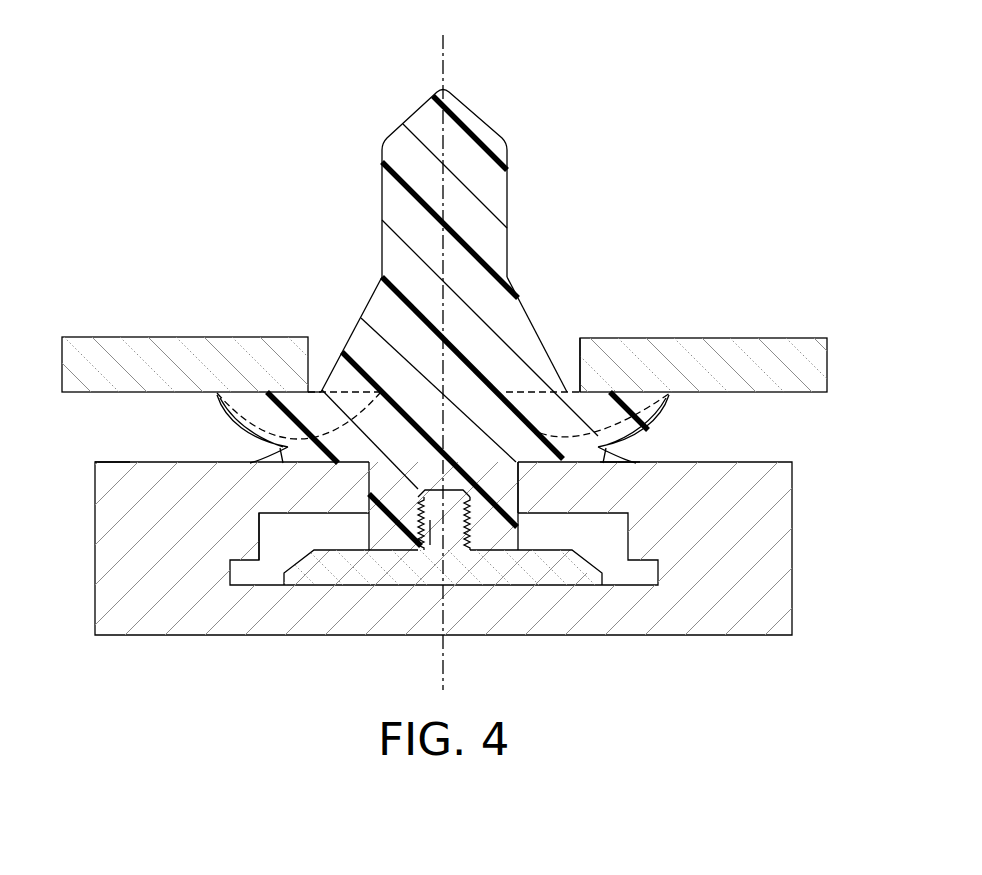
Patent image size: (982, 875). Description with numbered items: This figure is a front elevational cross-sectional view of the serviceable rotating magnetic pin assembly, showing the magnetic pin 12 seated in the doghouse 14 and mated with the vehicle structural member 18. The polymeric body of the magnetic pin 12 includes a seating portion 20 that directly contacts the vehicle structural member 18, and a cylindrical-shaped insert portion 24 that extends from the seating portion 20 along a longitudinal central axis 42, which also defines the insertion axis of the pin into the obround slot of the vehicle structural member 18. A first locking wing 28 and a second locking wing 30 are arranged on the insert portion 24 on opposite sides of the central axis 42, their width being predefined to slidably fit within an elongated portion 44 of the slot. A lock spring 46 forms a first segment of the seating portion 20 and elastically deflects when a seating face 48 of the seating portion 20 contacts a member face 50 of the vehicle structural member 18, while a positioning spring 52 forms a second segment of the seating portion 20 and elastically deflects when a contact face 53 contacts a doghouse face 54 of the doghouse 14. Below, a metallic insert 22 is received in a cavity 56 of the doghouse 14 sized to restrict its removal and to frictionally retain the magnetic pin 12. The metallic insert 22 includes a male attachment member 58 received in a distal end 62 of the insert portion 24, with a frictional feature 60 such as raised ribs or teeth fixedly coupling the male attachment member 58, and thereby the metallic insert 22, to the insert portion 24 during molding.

The magnetic pin 12 is at (498, 306).
The doghouse 14 is at (120, 547).
The vehicle structural member 18 is at (180, 350).
The seating portion 20 is at (553, 463).
The metallic insert 22 is at (333, 568).
The insert portion 24 is at (397, 212).
The first locking wing 28 is at (367, 335).
The second locking wing 30 is at (513, 330).
The longitudinal central axis 42 is at (445, 58).
The elongated portion 44 is at (578, 352).
The lock spring 46 is at (593, 420).
The seating face 48 is at (288, 390).
The member face 50 is at (142, 393).
The positioning spring 52 is at (597, 448).
The contact face 53 is at (613, 463).
The doghouse face 54 is at (110, 462).
The cavity 56 is at (270, 513).
The male attachment member 58 is at (452, 528).
The frictional feature 60 is at (417, 513).
The distal end 62 is at (495, 528).